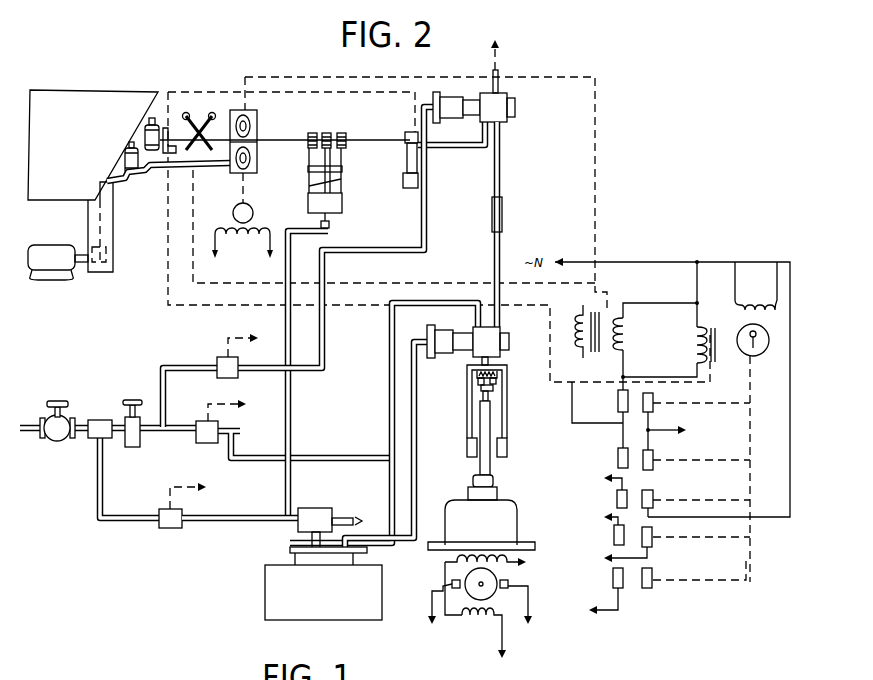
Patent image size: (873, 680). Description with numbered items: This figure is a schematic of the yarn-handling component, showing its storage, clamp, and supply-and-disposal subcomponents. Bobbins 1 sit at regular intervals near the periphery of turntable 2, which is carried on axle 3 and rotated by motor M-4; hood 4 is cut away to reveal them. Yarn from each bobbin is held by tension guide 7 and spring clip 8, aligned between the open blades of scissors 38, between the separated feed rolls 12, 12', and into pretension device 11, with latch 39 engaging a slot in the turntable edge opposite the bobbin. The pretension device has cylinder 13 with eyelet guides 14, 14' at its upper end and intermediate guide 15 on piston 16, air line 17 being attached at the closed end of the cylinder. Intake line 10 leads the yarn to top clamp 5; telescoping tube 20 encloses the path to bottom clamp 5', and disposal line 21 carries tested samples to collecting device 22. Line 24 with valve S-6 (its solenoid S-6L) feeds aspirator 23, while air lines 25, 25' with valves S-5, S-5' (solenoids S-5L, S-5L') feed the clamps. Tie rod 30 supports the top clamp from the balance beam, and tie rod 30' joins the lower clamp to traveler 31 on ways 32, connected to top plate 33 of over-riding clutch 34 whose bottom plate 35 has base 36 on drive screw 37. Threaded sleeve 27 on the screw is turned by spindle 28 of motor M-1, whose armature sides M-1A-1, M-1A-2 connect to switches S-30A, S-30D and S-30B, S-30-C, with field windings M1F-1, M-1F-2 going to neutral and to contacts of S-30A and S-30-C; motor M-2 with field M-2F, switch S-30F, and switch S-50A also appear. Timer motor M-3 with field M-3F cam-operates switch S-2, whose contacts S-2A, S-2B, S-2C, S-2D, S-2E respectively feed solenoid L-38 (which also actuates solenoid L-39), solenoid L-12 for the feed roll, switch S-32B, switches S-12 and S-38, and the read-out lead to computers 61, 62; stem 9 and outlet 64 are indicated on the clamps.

The bobbins 1 is at (143, 128).
The turntable 2 is at (118, 178).
The axle 3 is at (113, 233).
The hood 4 is at (58, 97).
The top clamp 5 is at (486, 107).
The bottom clamp 5' is at (477, 337).
The tension guide 7 is at (166, 128).
The spring clip 8 is at (405, 137).
The outlet direction 9 is at (495, 46).
The intake line 10 is at (457, 149).
The pretension device 11 is at (345, 203).
The top feed roll 12 is at (260, 141).
The feed roll 12' is at (263, 158).
The cylinder 13 is at (345, 166).
The eyelet guide 14 is at (315, 128).
The eyelet guide 14' is at (356, 133).
The intermediate guide 15 is at (328, 133).
The piston 16 is at (312, 171).
The air line 17 is at (290, 418).
The telescoping tube 20 is at (504, 173).
The disposal line 21 is at (393, 322).
The collecting device 22 is at (265, 590).
The aspirator 23 is at (325, 514).
The line 24 is at (237, 525).
The air line 25 is at (347, 237).
The air line 25' is at (337, 477).
The internally threaded sleeve 27 is at (480, 466).
The spindle 28 is at (496, 481).
The tie rod 30 is at (513, 78).
The tie rod 30' is at (508, 360).
The traveler 31 is at (467, 426).
The ways 32 is at (472, 453).
The top plate 33 is at (477, 374).
The over-riding clutch 34 is at (497, 379).
The bottom plate 35 is at (478, 385).
The base 36 is at (494, 389).
The drive screw 37 is at (490, 401).
The scissors 38 is at (199, 121).
The latch 39 is at (187, 167).
The outlet 64 is at (510, 342).
The computer 61 is at (612, 600).
The computer 62 is at (603, 601).
The motor M-1 is at (460, 514).
The field winding M1F-1 is at (455, 562).
The field winding M-1F-2 is at (480, 622).
The armature side M-1A-1 is at (452, 584).
The armature side M-1A-2 is at (510, 584).
The motor M-2 is at (258, 213).
The motor field winding M-2F is at (234, 244).
The timer motor M-3 is at (762, 351).
The field M-3F is at (750, 304).
The motor M-4 is at (52, 250).
The switch S-2 is at (723, 469).
The contacts S-2A is at (654, 398).
The contacts S-2B is at (654, 456).
The contacts S-2C is at (654, 495).
The contacts S-2D is at (653, 534).
The contacts S-2E is at (653, 575).
The upper clamp valve S-5 is at (212, 358).
The valve solenoid S-5L is at (246, 345).
The lower clamp valve S-5' is at (189, 441).
The valve solenoid S-5L' is at (236, 411).
The solenoid-actuated valve S-6 is at (165, 528).
The valve solenoid S-6L is at (205, 495).
The switch S-12 is at (594, 527).
The switch S-30A is at (431, 634).
The switch S-30B is at (534, 634).
The switch S-30-C is at (536, 654).
The switch S-30D is at (431, 654).
The switch S-30F is at (264, 272).
The switch S-32B is at (593, 490).
The switch S-38 is at (587, 555).
The switch S-50A is at (499, 669).
The solenoid L-12 is at (567, 331).
The solenoid L-38 is at (624, 330).
The solenoid L-39 is at (697, 355).